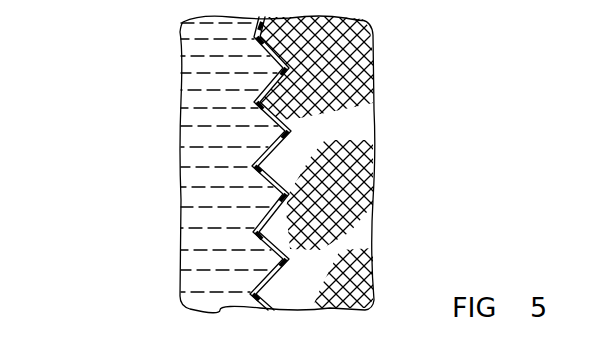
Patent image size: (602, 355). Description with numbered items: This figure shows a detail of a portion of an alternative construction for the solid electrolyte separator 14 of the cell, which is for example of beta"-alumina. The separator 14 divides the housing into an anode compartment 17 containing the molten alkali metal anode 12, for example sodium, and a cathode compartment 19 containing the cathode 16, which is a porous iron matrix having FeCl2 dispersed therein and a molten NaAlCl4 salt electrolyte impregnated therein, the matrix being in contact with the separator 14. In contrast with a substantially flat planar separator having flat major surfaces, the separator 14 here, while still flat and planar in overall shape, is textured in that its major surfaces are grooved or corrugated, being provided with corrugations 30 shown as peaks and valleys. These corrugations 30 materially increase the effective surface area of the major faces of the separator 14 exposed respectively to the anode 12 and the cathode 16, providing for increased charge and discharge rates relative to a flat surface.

The molten alkali metal anode 12 is at (197, 197).
The solid electrolyte separator 14 is at (255, 247).
The cathode 16 is at (360, 180).
The anode compartment 17 is at (219, 291).
The cathode compartment 19 is at (344, 292).
The corrugations 30 is at (258, 68).